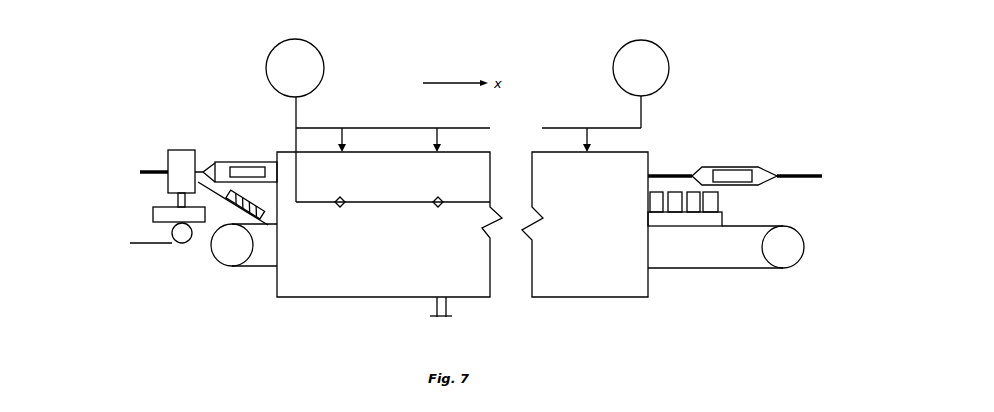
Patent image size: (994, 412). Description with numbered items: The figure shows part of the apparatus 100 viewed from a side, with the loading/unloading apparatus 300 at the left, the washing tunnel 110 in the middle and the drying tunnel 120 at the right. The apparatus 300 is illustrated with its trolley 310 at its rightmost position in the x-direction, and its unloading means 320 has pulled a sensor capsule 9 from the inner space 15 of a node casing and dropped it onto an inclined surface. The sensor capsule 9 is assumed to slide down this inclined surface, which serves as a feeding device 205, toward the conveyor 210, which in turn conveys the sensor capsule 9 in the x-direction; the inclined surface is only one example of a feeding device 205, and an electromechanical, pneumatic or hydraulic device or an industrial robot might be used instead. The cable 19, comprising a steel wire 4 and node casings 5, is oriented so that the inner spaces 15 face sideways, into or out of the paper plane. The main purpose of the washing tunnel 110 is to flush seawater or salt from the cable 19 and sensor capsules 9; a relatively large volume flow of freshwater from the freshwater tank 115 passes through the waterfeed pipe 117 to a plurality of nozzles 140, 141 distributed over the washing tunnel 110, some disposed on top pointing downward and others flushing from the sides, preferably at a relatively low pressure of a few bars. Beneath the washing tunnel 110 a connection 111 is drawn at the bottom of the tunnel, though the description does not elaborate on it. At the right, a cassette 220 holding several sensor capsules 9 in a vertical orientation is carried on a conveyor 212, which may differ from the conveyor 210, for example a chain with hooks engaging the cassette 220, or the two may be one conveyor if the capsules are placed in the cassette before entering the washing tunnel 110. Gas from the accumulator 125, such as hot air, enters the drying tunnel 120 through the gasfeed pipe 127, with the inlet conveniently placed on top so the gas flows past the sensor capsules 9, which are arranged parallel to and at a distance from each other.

The apparatus 100 is at (543, 35).
The cable 19 is at (749, 89).
The washing tunnel 110 is at (378, 251).
The freshwater tank 115 is at (295, 120).
The waterfeed pipe 117 is at (312, 128).
The nozzle 140 is at (343, 198).
The nozzle 141 is at (439, 155).
The outlet connector 111 is at (430, 307).
The drying tunnel 120 is at (568, 251).
The accumulator 125 is at (641, 84).
The gasfeed pipe 127 is at (593, 128).
The steel wire 4 is at (671, 176).
The node casing 5 is at (742, 167).
The cassette 220 is at (672, 224).
The conveyor 212 is at (690, 270).
The sensor capsule 9 is at (720, 200).
The conveyor 210 is at (255, 270).
The apparatus 300 is at (183, 128).
The unloading means 320 is at (170, 167).
The trolley 310 is at (153, 223).
The feeding device 205 is at (215, 162).
The inner space 15 is at (247, 162).